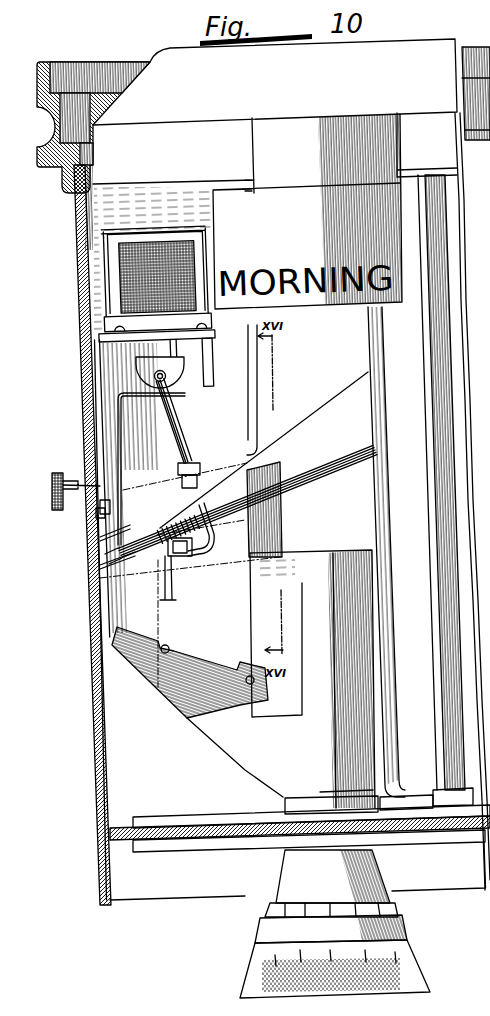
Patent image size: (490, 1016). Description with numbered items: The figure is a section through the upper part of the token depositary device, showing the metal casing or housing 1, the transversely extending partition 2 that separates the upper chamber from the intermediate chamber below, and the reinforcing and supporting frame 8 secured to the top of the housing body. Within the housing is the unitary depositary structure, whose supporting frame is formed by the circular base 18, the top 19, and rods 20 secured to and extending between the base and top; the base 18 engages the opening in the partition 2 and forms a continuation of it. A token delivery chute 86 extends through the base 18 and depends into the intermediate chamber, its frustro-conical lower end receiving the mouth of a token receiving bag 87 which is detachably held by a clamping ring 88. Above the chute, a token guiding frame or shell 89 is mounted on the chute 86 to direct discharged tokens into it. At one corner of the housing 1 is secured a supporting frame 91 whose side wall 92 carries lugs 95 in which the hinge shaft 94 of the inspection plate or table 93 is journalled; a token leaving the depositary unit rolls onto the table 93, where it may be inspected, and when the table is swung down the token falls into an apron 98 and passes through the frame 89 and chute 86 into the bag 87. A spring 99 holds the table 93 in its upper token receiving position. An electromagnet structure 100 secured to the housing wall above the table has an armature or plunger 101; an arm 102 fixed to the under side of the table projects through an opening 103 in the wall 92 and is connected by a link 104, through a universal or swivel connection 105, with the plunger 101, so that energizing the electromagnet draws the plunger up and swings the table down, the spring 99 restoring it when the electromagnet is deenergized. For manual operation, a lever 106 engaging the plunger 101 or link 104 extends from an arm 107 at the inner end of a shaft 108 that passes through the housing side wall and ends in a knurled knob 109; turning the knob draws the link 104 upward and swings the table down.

The casing or housing 1 is at (92, 690).
The transversely extending partition 2 is at (158, 838).
The reinforcing and supporting frame 8 is at (50, 160).
The circular base 18 is at (180, 797).
The top 19 is at (163, 62).
The rods 20 is at (442, 628).
The token delivery chute 86 is at (293, 887).
The token receiving bag 87 is at (265, 976).
The clamping ring 88 is at (402, 928).
The token guiding frame or shell 89 is at (230, 757).
The supporting frame 91 is at (100, 537).
The side wall 92 is at (240, 402).
The inspection plate or table 93 is at (165, 462).
The hinge shaft 94 is at (100, 565).
The lugs 95 is at (139, 556).
The apron 98 is at (142, 683).
The spring 99 is at (185, 468).
The electromagnet structure 100 is at (132, 260).
The armature or plunger 101 is at (155, 349).
The arm 102 is at (188, 582).
The opening 103 is at (174, 592).
The link 104 is at (180, 446).
The universal or swivel connection 105 is at (197, 558).
The lever 106 is at (118, 424).
The arm 107 is at (100, 513).
The shaft 108 is at (80, 486).
The knurled knob 109 is at (60, 485).